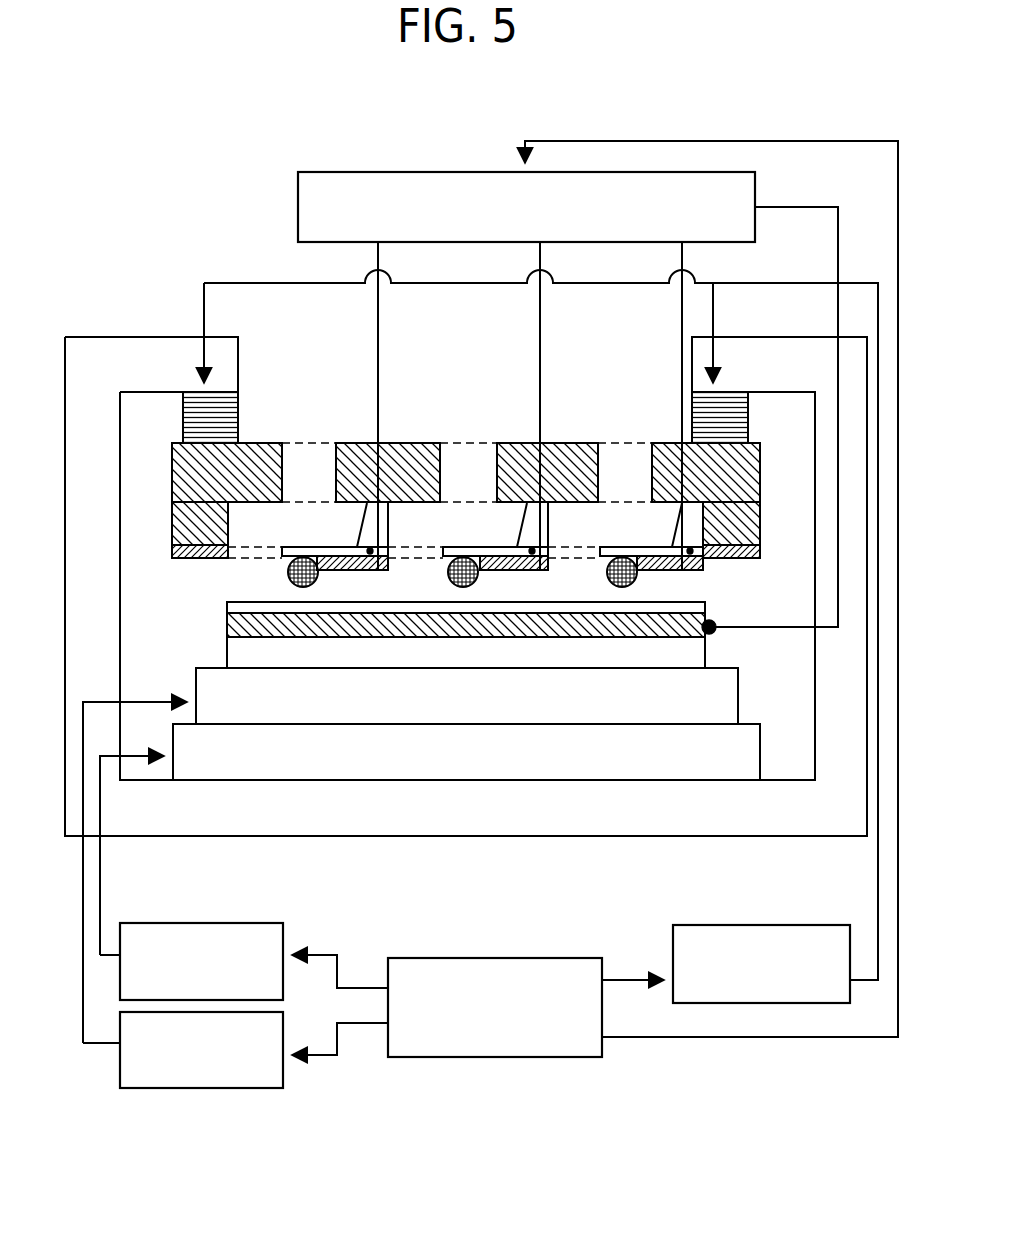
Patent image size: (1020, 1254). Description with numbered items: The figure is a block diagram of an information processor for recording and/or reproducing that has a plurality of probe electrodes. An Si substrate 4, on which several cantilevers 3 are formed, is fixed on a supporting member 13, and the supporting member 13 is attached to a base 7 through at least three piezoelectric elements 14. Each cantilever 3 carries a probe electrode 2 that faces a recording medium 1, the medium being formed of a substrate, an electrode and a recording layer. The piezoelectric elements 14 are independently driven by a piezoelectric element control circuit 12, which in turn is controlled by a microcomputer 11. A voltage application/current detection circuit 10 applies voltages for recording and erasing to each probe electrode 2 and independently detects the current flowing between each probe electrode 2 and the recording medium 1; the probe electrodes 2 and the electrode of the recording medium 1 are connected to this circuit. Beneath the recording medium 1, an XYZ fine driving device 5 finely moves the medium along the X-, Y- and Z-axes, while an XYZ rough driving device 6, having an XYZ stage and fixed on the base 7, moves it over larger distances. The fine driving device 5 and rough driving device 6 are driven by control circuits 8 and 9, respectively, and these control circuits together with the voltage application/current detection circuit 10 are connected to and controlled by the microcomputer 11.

The recording medium 1 is at (222, 602).
The probe electrode 2 is at (288, 577).
The cantilever 3 is at (317, 543).
The Si substrate 4 is at (747, 535).
The XYZ fine driving device 5 is at (728, 692).
The XYZ rough driving device 6 is at (748, 748).
The base 7 is at (590, 830).
The control circuit 8 is at (213, 1043).
The control circuit 9 is at (213, 946).
The voltage application/current detection circuit 10 is at (548, 202).
The microcomputer 11 is at (496, 988).
The piezoelectric element control circuit 12 is at (761, 947).
The supporting member 13 is at (743, 475).
The piezoelectric element 14 is at (742, 413).